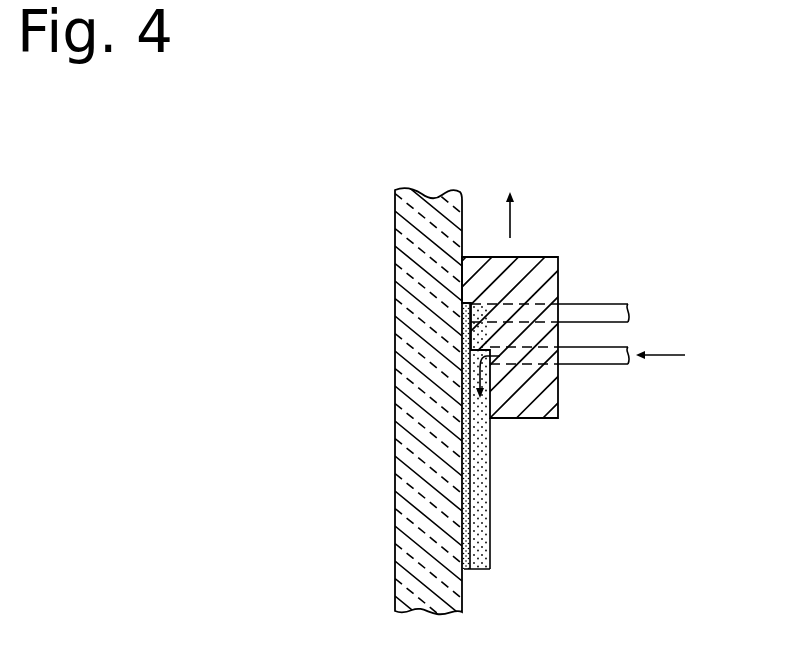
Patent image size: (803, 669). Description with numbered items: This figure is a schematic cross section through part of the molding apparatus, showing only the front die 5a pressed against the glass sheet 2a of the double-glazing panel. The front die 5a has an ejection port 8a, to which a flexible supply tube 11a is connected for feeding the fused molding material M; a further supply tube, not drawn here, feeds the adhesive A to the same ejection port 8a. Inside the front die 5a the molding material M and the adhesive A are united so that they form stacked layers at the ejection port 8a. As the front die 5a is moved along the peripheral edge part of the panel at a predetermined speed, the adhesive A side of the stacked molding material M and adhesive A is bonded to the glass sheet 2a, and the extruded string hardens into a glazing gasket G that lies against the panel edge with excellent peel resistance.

The glass sheet 2a is at (462, 207).
The front die 5a is at (558, 283).
The ejection port 8a is at (492, 362).
The flexible supply tube 11a is at (603, 352).
The adhesive A is at (636, 313).
The molding material M is at (493, 535).
The glazing gasket G is at (491, 496).